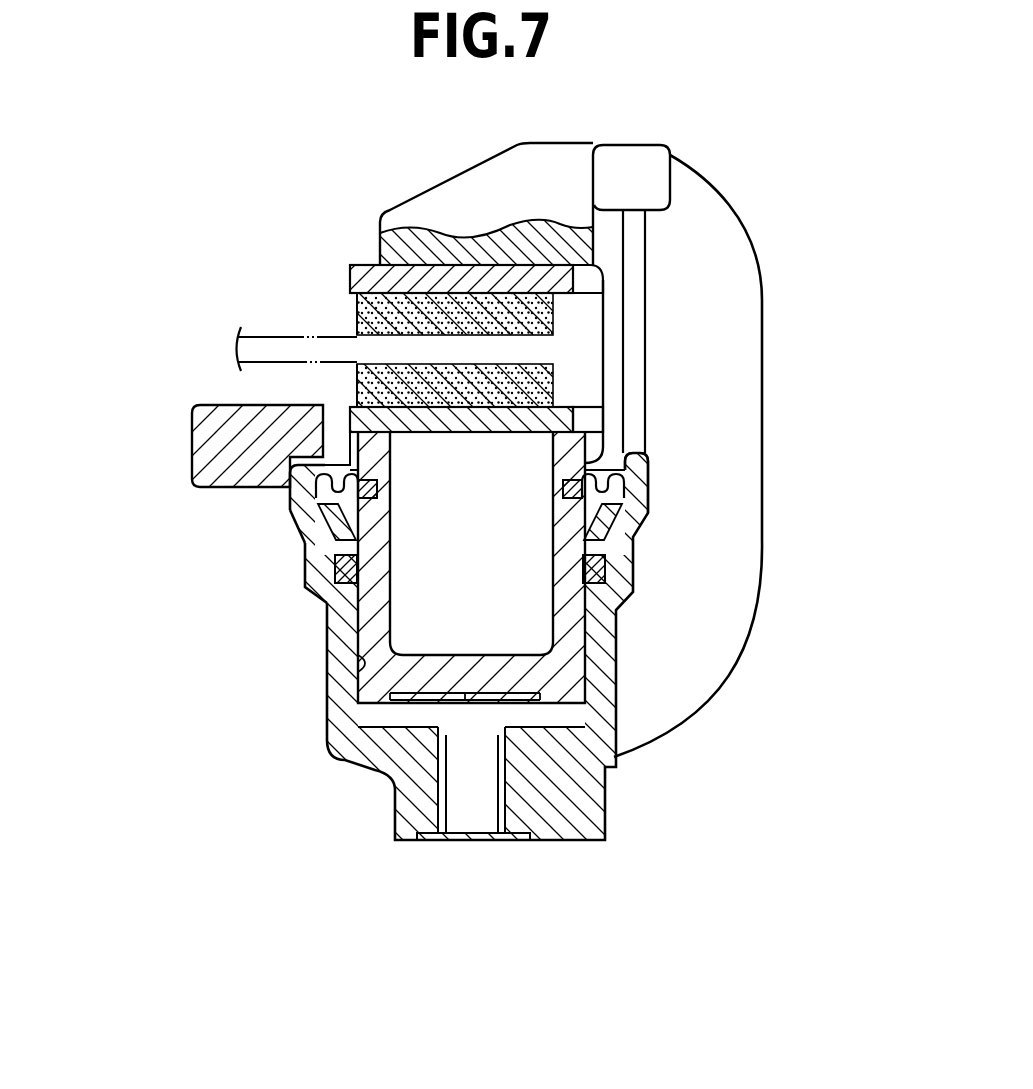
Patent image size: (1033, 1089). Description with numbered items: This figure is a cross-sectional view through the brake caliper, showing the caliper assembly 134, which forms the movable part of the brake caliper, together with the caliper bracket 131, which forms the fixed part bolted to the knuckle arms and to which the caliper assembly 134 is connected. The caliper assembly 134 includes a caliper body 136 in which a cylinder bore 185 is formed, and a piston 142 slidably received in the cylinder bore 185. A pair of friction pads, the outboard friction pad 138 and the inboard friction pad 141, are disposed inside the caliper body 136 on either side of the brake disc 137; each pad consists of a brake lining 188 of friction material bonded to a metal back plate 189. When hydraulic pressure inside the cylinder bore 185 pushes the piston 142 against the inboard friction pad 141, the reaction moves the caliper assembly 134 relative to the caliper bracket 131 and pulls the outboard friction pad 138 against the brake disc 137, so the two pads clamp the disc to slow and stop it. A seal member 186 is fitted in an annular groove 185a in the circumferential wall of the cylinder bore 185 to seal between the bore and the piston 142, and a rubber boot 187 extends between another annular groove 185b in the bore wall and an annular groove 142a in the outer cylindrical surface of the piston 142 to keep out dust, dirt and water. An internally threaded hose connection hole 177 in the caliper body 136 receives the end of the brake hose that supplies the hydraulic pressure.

The caliper bracket 131 is at (184, 381).
The caliper assembly 134 is at (722, 193).
The caliper body 136 is at (724, 367).
The brake disc 137 is at (343, 337).
The outboard friction pad 138 is at (361, 259).
The inboard friction pad 141 is at (352, 383).
The piston 142 is at (639, 614).
The annular groove 142a is at (605, 445).
The hose connection hole 177 is at (467, 840).
The cylinder bore 185 is at (372, 698).
The annular groove 185a is at (320, 578).
The annular groove 185b is at (305, 543).
The seal ring 186 is at (343, 590).
The rubber boot 187 is at (300, 450).
The brake lining 188 is at (555, 382).
The metal back plate 189 is at (555, 283).